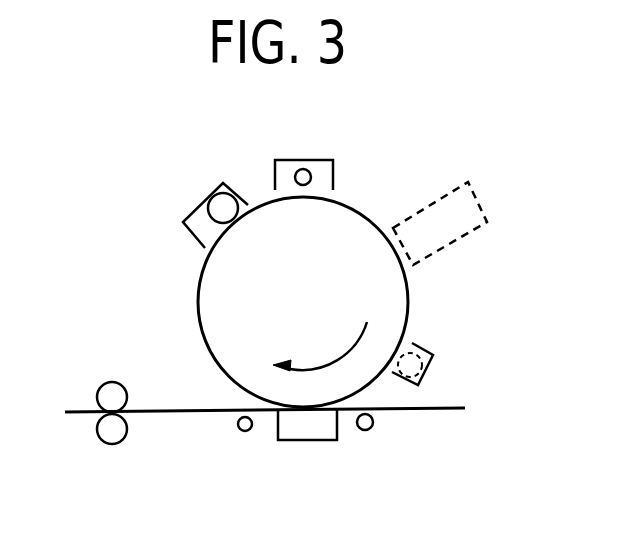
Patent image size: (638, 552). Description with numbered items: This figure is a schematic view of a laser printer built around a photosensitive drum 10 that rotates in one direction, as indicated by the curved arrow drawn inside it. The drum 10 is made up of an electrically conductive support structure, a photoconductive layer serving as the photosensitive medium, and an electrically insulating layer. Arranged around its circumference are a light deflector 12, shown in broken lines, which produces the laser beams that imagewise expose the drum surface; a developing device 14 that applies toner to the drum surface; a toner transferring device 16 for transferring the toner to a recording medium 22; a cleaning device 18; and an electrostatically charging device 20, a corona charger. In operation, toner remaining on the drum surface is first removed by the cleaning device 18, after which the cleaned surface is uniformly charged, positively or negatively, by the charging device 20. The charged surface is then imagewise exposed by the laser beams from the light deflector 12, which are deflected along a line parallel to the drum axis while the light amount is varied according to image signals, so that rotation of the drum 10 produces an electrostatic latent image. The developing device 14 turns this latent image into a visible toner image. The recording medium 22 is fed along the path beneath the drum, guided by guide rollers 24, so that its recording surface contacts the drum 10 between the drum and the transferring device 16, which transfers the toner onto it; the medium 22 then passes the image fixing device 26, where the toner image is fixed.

The photosensitive drum 10 is at (208, 305).
The light deflector 12 is at (482, 204).
The developing device 14 is at (428, 378).
The toner transferring device 16 is at (312, 445).
The cleaning device 18 is at (182, 219).
The electrostatically charging device 20 is at (320, 160).
The recording medium 22 is at (430, 410).
The guide rollers 24 is at (240, 431).
The image fixing device 26 is at (107, 432).